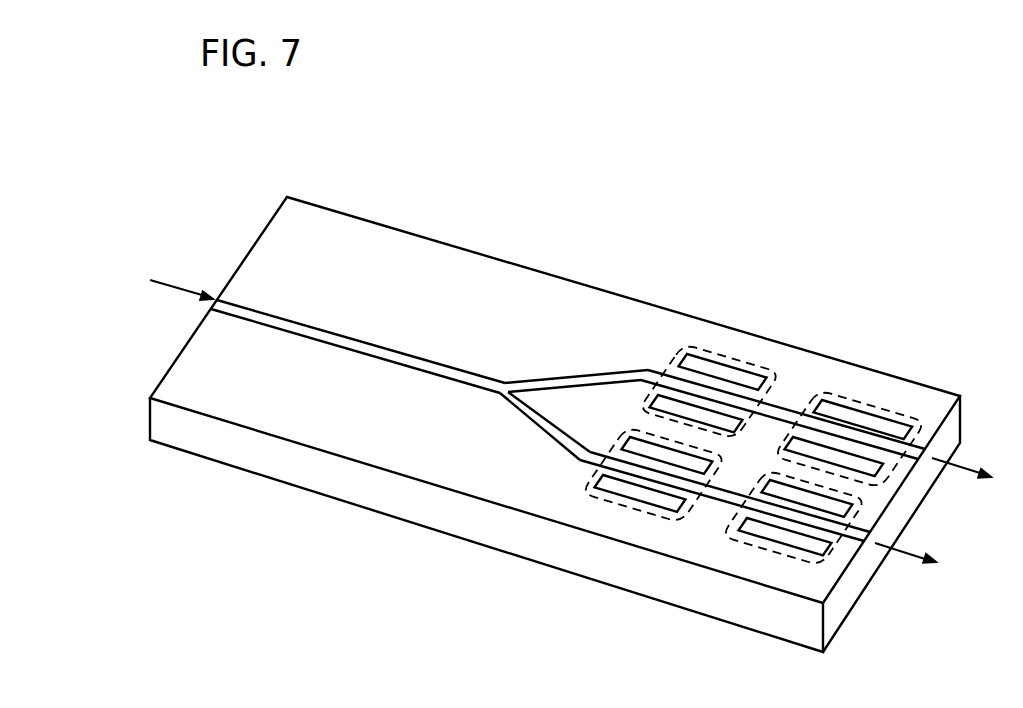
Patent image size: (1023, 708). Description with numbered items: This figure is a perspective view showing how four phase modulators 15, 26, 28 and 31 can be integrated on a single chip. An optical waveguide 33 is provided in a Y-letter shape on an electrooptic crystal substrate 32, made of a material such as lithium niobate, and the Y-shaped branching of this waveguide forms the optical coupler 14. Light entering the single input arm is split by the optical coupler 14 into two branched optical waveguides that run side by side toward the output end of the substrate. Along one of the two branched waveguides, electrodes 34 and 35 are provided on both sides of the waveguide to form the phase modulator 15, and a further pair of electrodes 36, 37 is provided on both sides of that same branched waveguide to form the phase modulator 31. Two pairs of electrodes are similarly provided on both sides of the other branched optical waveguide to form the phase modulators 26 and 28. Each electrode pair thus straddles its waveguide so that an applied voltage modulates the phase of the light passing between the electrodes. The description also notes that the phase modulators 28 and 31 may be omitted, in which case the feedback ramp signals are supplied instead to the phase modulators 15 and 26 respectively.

The electrooptic crystal substrate 32 is at (308, 475).
The optical waveguide 33 is at (336, 332).
The optical coupler 14 is at (507, 383).
The phase modulator 31 is at (689, 330).
The electrode 36 is at (732, 372).
The electrode 37 is at (718, 420).
The electrode 34 is at (857, 410).
The electrode 35 is at (853, 455).
The phase modulator 28 is at (630, 508).
The phase modulator 26 is at (772, 555).
The phase modulator 15 is at (950, 389).